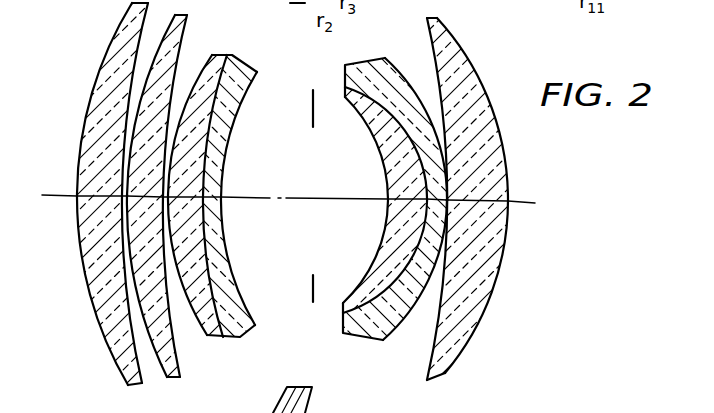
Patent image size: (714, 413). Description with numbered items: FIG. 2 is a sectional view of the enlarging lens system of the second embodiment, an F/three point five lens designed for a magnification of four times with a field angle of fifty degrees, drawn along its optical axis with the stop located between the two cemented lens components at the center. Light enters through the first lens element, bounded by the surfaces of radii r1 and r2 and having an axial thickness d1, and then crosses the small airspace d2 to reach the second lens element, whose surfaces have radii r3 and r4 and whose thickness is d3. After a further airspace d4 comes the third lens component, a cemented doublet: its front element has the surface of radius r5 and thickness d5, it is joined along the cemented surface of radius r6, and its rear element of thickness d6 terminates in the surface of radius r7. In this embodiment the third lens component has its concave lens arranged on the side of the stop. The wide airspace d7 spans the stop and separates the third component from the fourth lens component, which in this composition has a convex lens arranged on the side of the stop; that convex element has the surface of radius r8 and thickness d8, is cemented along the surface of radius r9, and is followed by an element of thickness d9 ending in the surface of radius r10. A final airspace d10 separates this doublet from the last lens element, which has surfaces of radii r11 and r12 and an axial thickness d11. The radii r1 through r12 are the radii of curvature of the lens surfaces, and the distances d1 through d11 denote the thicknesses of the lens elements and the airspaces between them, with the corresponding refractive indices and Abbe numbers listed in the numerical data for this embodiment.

The radius of curvature of first lens surface r1 is at (126, 380).
The radius of curvature of second lens surface r2 is at (144, 378).
The radius of curvature of third lens surface r3 is at (168, 380).
The radius of curvature of fourth lens surface r4 is at (181, 376).
The radius of curvature of fifth lens surface r5 is at (207, 336).
The radius of curvature of sixth lens surface r6 is at (243, 338).
The radius of curvature of seventh lens surface r7 is at (255, 297).
The radius of curvature of eighth lens surface r8 is at (347, 300).
The radius of curvature of ninth lens surface r9 is at (353, 340).
The radius of curvature of tenth lens surface r10 is at (396, 338).
The radius of curvature of eleventh lens surface r11 is at (426, 378).
The radius of curvature of twelfth lens surface r12 is at (446, 371).
The thickness of first lens element d1 is at (96, 195).
The airspace between first and second lens elements d2 is at (119, 194).
The thickness of second lens element d3 is at (143, 196).
The airspace between second and third lens components d4 is at (165, 194).
The thickness of front element of third lens component d5 is at (184, 196).
The thickness of stop-side element of third lens component d6 is at (214, 196).
The airspace across the stop d7 is at (296, 199).
The thickness of stop-side element of fourth lens component d8 is at (407, 200).
The thickness of rear element of fourth lens component d9 is at (423, 164).
The airspace between fourth and fifth lens components d10 is at (448, 188).
The thickness of fifth lens element d11 is at (491, 200).